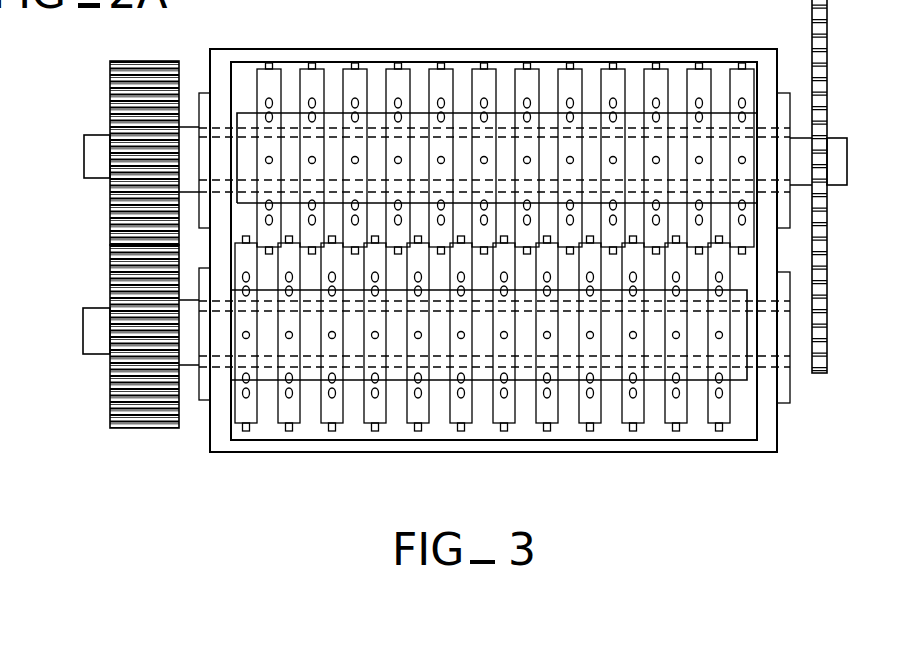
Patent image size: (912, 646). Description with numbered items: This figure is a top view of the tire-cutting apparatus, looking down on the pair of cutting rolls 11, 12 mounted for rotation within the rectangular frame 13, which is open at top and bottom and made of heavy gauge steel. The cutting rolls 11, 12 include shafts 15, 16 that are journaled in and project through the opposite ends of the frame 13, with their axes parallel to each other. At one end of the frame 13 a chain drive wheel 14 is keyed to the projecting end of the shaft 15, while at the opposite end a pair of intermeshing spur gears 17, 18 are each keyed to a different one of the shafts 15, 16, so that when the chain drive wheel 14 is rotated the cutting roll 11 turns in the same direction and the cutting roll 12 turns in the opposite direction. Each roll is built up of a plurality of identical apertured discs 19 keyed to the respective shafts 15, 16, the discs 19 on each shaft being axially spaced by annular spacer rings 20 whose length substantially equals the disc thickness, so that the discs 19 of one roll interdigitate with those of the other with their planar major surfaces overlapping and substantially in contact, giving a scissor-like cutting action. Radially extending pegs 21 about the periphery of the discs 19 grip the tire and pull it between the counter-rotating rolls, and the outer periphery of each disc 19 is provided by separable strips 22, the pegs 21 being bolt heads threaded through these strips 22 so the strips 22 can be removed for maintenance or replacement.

The cutting roll 11 is at (417, 78).
The cutting roll 12 is at (436, 427).
The rectangular frame 13 is at (560, 445).
The chain drive wheel 14 is at (828, 3).
The shaft 15 is at (97, 157).
The shaft 16 is at (97, 328).
The spur gear 17 is at (130, 105).
The spur gear 18 is at (130, 394).
The apertured disc 19 is at (310, 83).
The annular spacer ring 20 is at (630, 95).
The peg 21 is at (485, 78).
The strip 22 is at (395, 80).